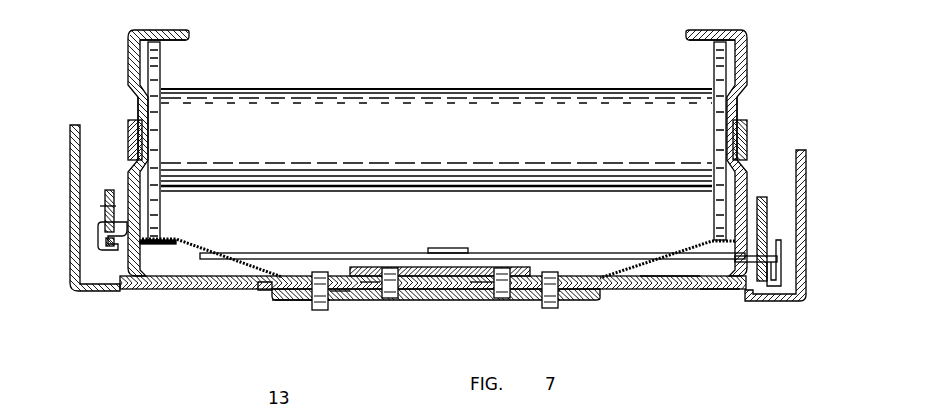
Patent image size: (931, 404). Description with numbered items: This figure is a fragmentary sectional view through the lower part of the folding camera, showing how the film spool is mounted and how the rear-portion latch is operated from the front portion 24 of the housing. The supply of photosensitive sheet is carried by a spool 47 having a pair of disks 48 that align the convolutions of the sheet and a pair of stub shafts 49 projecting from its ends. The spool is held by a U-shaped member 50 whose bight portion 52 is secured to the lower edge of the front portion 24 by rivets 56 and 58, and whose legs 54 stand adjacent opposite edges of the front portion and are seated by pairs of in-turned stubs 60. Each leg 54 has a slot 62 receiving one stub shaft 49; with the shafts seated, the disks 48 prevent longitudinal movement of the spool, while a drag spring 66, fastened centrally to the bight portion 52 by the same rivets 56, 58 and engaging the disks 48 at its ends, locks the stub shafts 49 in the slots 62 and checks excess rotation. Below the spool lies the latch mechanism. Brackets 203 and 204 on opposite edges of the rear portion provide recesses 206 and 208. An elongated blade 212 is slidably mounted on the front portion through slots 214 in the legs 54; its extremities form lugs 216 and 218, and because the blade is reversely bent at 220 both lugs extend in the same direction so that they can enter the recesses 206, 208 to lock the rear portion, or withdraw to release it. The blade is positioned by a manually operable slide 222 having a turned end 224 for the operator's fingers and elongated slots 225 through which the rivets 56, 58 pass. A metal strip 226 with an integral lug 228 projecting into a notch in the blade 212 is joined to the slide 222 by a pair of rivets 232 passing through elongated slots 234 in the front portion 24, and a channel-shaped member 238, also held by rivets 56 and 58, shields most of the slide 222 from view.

The front portion 24 is at (189, 281).
The spool 47 is at (351, 91).
The disks 48 is at (160, 207).
The stub shafts 49 is at (128, 152).
The U-shaped member 50 is at (666, 280).
The bight portion 52 is at (688, 280).
The legs 54 is at (128, 40).
The rivet 56 is at (318, 310).
The rivet 58 is at (549, 308).
The in-turned stubs 60 is at (164, 30).
The slot 62 is at (128, 126).
The drag spring 66 is at (200, 246).
The bracket 203 is at (775, 198).
The bracket 204 is at (100, 206).
The recess 206 is at (777, 258).
The recess 208 is at (120, 194).
The blade 212 is at (322, 252).
The slots 214 is at (126, 270).
The lug 216 is at (768, 290).
The lug 218 is at (162, 232).
The reverse bend 220 is at (98, 240).
The slide 222 is at (274, 300).
The turned end 224 is at (262, 290).
The elongated slots 225 is at (342, 292).
The metal strip 226 is at (478, 268).
The lug 228 is at (436, 248).
The rivets 232 is at (388, 300).
The elongated slots 234 is at (370, 281).
The channel-shaped member 238 is at (428, 300).